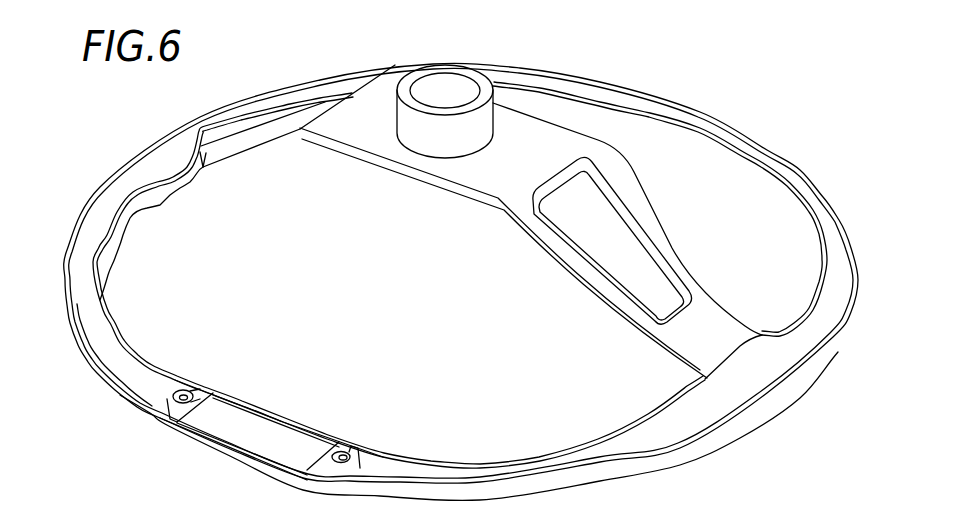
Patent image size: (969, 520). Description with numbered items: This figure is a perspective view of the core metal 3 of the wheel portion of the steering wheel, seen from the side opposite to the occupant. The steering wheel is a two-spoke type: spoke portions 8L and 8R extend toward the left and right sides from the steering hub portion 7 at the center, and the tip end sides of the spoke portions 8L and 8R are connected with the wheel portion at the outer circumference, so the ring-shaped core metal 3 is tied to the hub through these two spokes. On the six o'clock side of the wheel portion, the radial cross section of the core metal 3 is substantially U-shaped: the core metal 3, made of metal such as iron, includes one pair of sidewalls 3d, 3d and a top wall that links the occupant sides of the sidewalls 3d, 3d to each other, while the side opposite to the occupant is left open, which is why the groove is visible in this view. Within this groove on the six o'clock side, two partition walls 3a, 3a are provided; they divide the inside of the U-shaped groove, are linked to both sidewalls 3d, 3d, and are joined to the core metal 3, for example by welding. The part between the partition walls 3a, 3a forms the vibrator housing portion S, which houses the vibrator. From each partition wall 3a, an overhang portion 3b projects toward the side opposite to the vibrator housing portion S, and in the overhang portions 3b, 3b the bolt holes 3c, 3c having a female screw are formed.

The core metal 3 is at (705, 100).
The partition wall 3a is at (200, 413).
The overhang portion 3b is at (174, 391).
The bolt hole 3c is at (185, 394).
The sidewall 3d is at (273, 403).
The steering hub portion 7 is at (465, 190).
The spoke portion 8R is at (238, 178).
The spoke portion 8L is at (578, 278).
The vibrator housing portion S is at (260, 437).